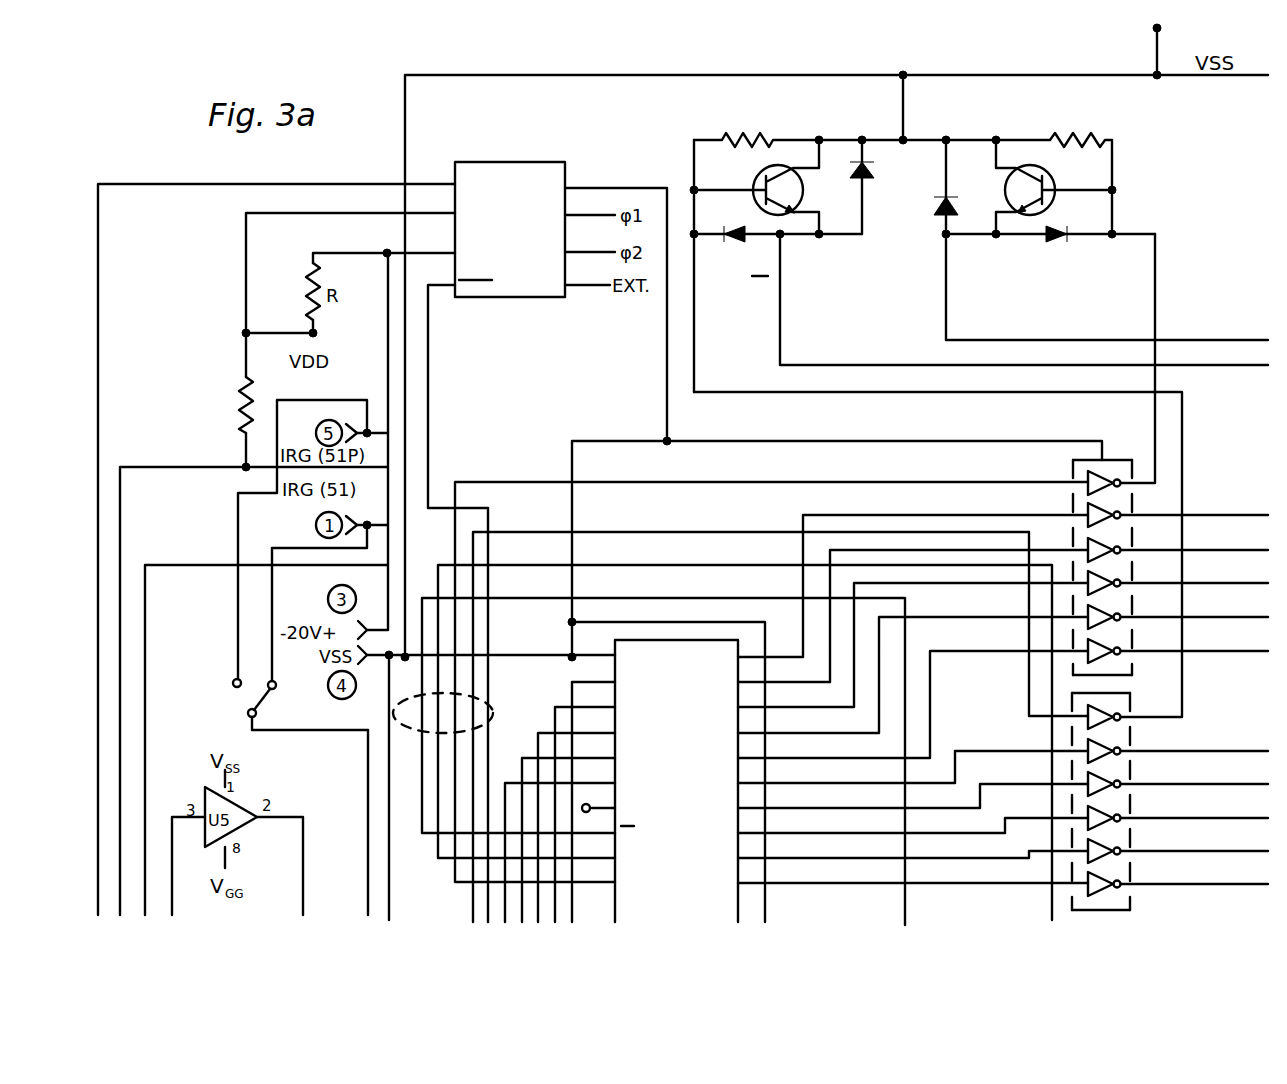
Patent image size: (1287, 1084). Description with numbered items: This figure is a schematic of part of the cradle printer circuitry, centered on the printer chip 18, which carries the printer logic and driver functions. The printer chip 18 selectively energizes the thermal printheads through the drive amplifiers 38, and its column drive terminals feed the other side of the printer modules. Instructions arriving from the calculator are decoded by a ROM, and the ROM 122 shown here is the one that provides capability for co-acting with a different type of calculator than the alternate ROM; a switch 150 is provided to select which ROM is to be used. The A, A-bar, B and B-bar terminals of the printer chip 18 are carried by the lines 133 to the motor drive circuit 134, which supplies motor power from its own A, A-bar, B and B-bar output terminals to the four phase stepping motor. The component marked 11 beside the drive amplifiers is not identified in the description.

The printer chip 18 is at (680, 709).
The drive amplifiers 38 is at (1100, 657).
The ROM 122 is at (508, 300).
The lines 133 is at (492, 713).
The motor drive circuit 134 is at (888, 303).
The switch 150 is at (245, 697).
The inverter package 11 is at (1043, 430).